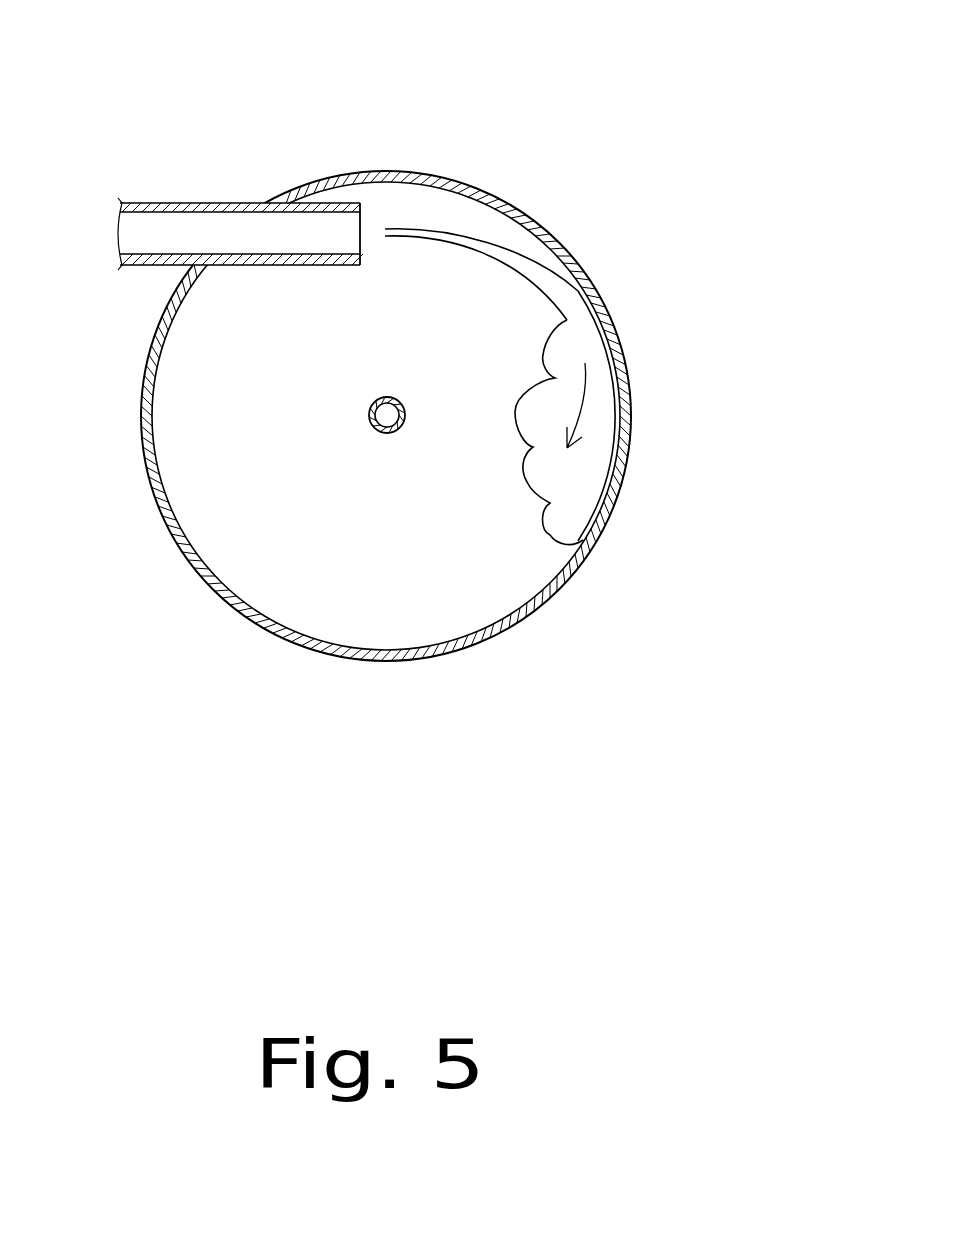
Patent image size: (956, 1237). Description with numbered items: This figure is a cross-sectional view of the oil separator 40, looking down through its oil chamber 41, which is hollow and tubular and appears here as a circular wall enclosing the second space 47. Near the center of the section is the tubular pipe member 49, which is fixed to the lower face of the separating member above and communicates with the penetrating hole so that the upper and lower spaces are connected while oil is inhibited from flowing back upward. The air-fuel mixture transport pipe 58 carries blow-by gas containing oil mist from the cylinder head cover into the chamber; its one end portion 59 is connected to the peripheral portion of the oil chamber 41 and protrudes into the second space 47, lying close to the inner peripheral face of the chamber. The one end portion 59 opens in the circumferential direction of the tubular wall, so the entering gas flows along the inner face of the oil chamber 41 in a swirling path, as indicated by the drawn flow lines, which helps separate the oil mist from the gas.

The oil separator 40 is at (645, 88).
The oil chamber 41 is at (570, 247).
The second space 47 is at (503, 590).
The tubular pipe member 49 is at (378, 433).
The air-fuel mixture transport pipe 58 is at (162, 203).
The one end portion 59 is at (338, 203).